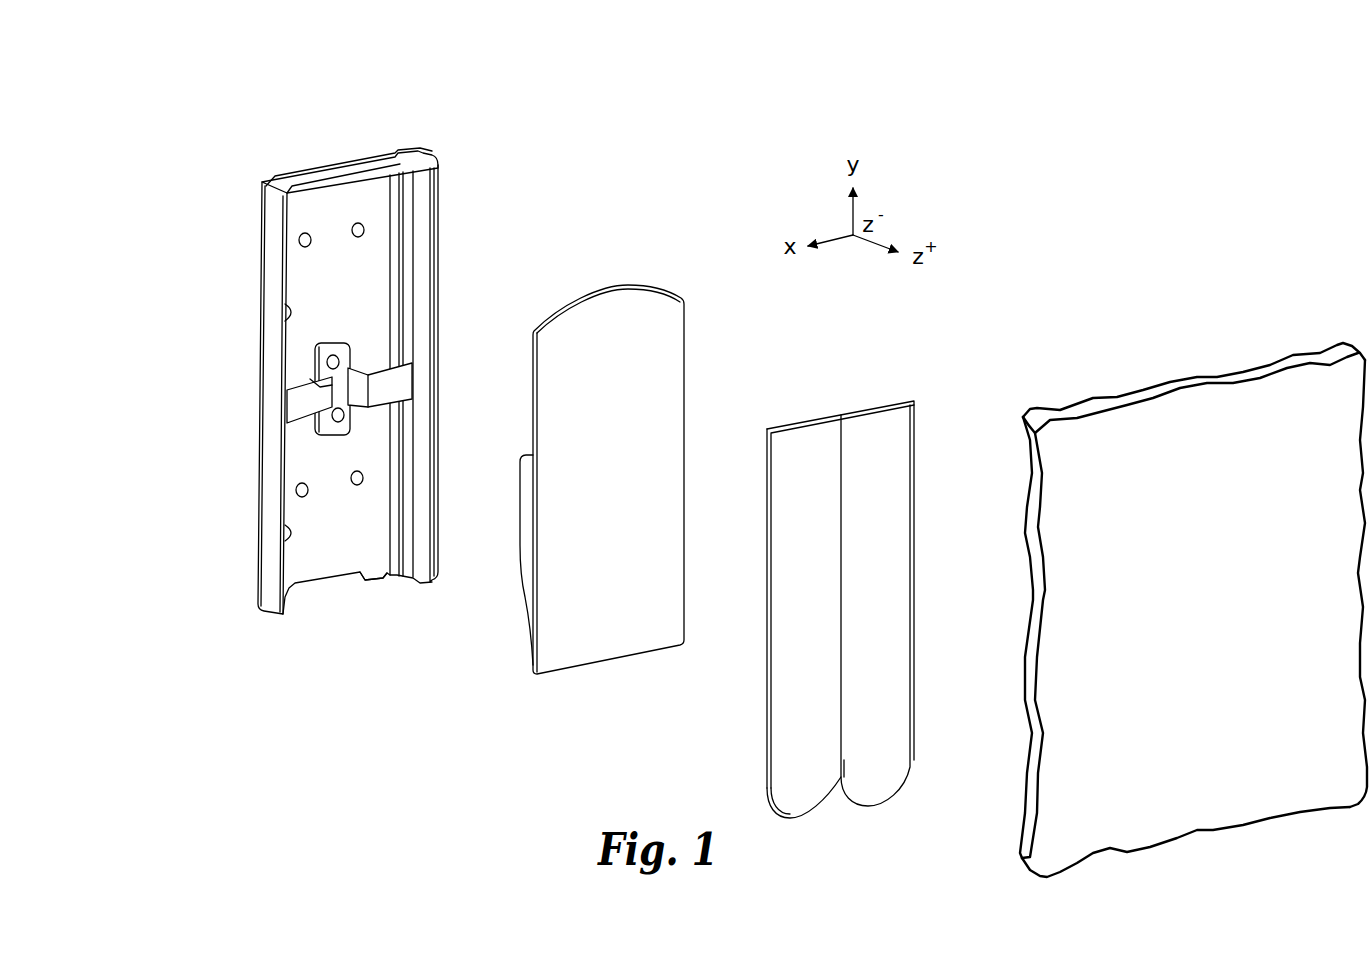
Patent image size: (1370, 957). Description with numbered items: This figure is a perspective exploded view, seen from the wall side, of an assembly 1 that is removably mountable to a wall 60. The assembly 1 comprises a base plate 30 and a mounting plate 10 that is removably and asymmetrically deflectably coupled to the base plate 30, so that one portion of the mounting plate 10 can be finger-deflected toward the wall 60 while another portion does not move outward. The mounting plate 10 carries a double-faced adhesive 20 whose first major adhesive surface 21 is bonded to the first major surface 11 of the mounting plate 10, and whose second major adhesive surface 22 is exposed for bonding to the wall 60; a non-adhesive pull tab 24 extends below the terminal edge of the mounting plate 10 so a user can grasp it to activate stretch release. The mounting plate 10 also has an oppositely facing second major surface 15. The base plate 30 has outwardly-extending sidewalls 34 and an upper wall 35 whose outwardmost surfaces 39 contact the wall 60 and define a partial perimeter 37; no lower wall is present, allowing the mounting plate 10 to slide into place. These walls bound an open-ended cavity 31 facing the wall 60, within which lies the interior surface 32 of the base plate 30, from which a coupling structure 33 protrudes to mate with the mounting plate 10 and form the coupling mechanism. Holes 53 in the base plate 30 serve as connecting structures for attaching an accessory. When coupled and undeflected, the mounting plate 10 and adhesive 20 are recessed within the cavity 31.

The assembly 1 is at (200, 108).
The mounting plate 10 is at (590, 268).
The first major surface 11 is at (672, 342).
The second major surface 15 is at (520, 345).
The double-faced adhesive 20 is at (845, 385).
The first major adhesive surface 21 is at (752, 435).
The second major adhesive surface 22 is at (903, 470).
The pull tab 24 is at (805, 805).
The base plate 30 is at (308, 148).
The open-ended cavity 31 is at (372, 560).
The interior surface 32 is at (305, 568).
The coupling structure 33 is at (405, 386).
The sidewalls 34 is at (268, 396).
The upper wall 35 is at (368, 165).
The partial perimeter 37 is at (290, 532).
The outwardmost surfaces 39 is at (283, 314).
The holes 53 is at (300, 240).
The wall 60 is at (1193, 610).